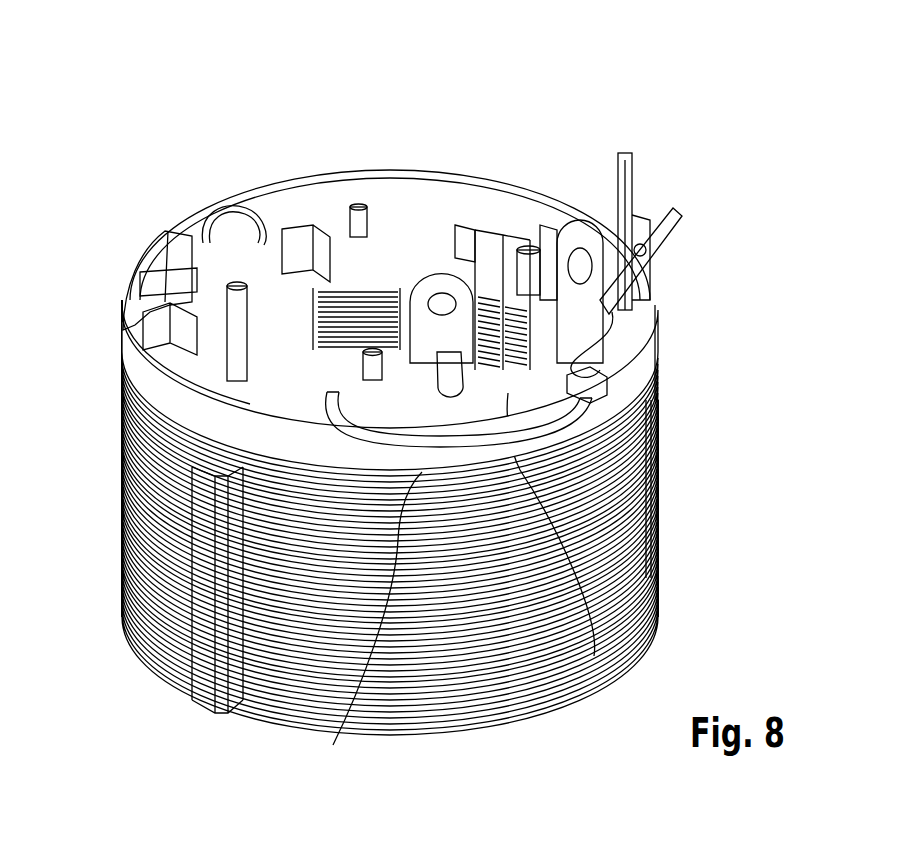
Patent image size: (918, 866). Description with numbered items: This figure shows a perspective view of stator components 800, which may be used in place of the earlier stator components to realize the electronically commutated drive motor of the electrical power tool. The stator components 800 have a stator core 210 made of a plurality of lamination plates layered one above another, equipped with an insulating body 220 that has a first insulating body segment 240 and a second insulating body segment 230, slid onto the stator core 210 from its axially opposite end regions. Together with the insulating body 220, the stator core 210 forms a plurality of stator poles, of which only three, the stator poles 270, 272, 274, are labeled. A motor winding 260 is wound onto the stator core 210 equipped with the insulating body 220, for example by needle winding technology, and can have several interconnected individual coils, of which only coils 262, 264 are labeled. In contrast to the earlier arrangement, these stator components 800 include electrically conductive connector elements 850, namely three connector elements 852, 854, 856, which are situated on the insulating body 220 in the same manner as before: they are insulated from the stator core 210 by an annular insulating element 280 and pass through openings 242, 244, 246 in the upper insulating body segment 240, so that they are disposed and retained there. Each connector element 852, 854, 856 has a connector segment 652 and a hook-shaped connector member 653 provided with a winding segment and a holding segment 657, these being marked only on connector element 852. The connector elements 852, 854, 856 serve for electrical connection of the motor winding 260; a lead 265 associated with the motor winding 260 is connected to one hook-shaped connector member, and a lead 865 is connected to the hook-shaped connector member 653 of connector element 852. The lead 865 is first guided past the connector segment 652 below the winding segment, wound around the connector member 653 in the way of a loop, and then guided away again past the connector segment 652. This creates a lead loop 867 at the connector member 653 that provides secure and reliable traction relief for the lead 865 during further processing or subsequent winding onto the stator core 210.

The stator components 800 is at (128, 95).
The insulating body 220 is at (428, 155).
The first insulating body segment 240 is at (160, 256).
The stator pole 272 is at (208, 272).
The stator pole 270 is at (292, 254).
The motor winding 260 is at (318, 258).
The individual coil 262 is at (302, 250).
The connector segment 652 is at (357, 206).
The connector element 852 is at (420, 272).
The holding segment 657 is at (480, 262).
The stator pole 274 is at (487, 240).
The individual coil 264 is at (478, 262).
The hook-shaped connector member 653 is at (529, 248).
The connector element 854 is at (581, 226).
The connector element 856 is at (626, 152).
The electrically conductive connector elements 850 is at (650, 148).
The lead 265 is at (643, 230).
The opening 246 is at (656, 284).
The opening 244 is at (600, 402).
The opening 242 is at (435, 350).
The lead loop 867 is at (410, 373).
The stator core 210 is at (206, 706).
The insulating element 280 is at (367, 625).
The second insulating body segment 230 is at (417, 738).
The lead 865 is at (559, 538).